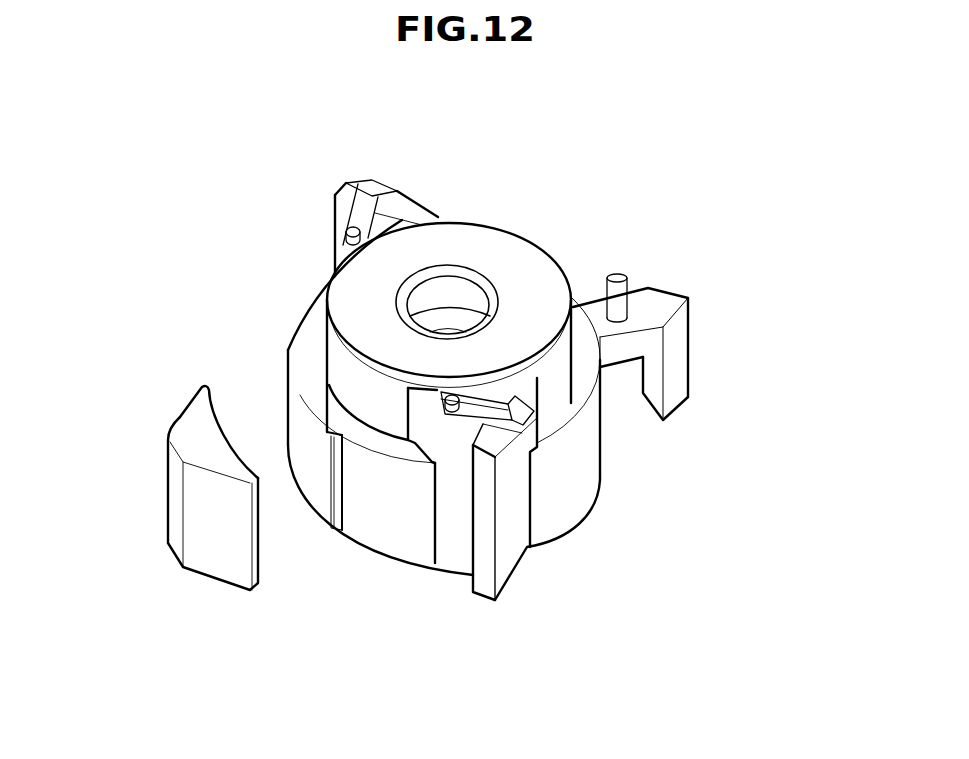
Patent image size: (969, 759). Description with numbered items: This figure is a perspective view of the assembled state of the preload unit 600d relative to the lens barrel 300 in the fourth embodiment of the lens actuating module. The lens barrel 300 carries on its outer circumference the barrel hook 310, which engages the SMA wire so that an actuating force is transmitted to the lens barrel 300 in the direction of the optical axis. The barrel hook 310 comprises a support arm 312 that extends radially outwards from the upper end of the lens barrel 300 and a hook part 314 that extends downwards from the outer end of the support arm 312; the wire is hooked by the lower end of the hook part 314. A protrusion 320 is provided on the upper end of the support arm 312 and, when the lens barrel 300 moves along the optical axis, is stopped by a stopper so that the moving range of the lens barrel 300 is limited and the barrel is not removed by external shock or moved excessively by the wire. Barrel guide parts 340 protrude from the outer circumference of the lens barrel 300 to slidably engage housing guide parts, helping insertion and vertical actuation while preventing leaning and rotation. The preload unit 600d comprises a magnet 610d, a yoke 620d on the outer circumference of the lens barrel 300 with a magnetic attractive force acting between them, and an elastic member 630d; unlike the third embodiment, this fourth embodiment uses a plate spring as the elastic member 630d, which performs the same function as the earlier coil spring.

The lens barrel 300 is at (299, 167).
The barrel hook 310 is at (807, 262).
The support arm 312 is at (662, 300).
The hook part 314 is at (673, 370).
The protrusion 320 is at (620, 273).
The barrel guide part 340 is at (510, 542).
The preload unit 600d is at (133, 244).
The magnet 610d is at (194, 424).
The yoke 620d is at (292, 410).
The elastic member 630d is at (357, 217).